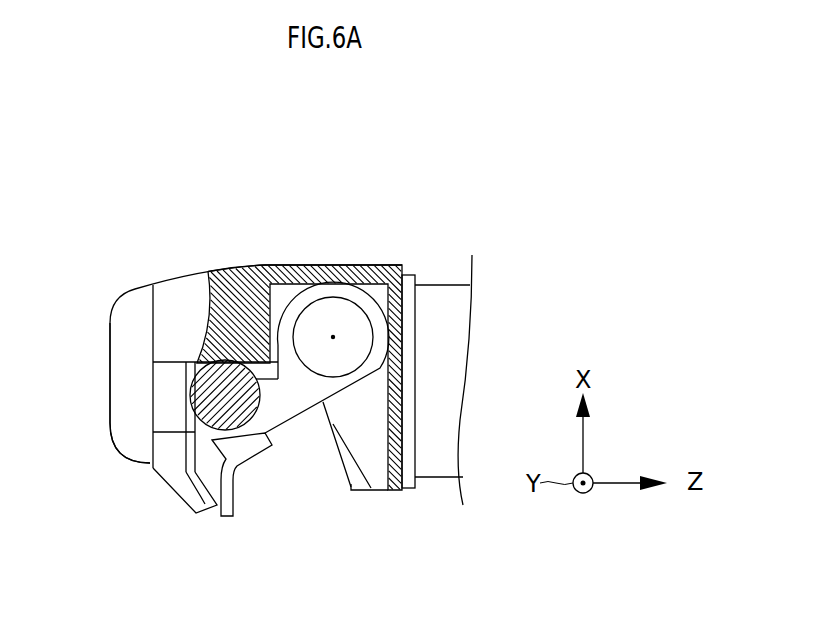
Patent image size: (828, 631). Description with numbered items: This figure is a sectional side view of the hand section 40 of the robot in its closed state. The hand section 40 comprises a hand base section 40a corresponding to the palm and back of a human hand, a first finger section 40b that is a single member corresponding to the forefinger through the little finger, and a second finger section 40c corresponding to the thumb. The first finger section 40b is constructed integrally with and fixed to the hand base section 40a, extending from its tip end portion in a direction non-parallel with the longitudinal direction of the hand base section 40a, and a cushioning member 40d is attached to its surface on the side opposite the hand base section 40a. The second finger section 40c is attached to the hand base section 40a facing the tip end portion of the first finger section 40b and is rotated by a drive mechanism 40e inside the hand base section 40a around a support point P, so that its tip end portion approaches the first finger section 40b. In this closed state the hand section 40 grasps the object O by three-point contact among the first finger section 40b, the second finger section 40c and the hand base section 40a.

The hand section 40 is at (165, 155).
The hand base section 40a is at (230, 266).
The first finger section 40b is at (163, 473).
The second finger section 40c is at (288, 424).
The cushioning member 40d is at (122, 397).
The drive mechanism 40e is at (325, 363).
The object O is at (197, 370).
The support point P is at (336, 336).